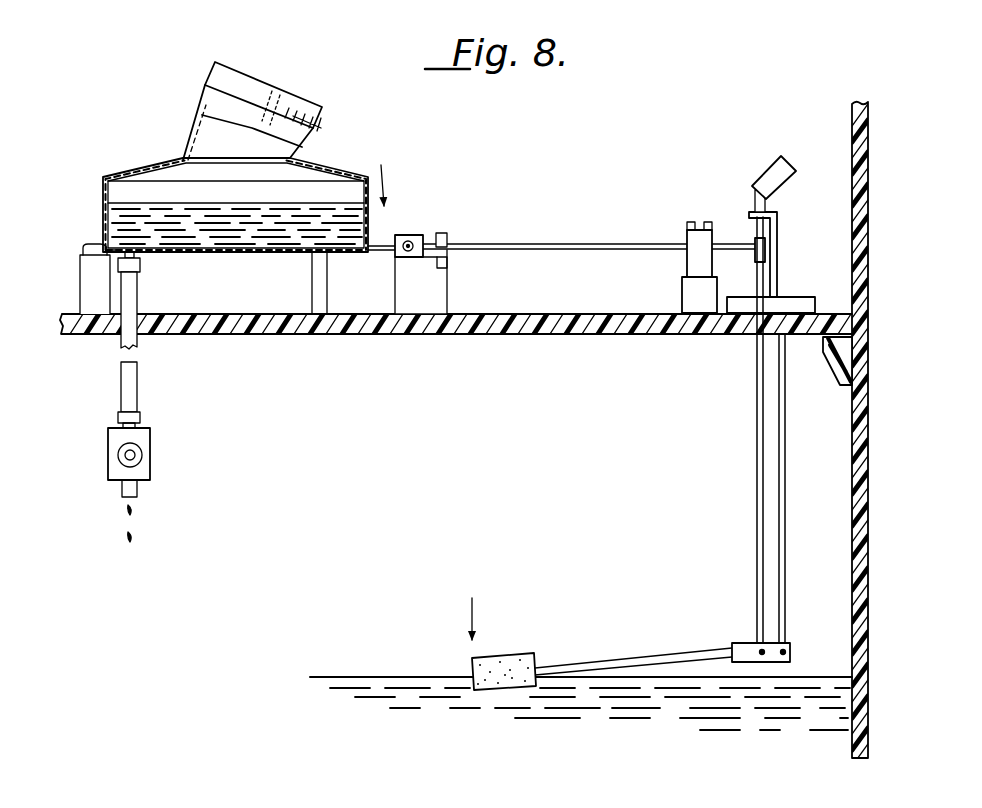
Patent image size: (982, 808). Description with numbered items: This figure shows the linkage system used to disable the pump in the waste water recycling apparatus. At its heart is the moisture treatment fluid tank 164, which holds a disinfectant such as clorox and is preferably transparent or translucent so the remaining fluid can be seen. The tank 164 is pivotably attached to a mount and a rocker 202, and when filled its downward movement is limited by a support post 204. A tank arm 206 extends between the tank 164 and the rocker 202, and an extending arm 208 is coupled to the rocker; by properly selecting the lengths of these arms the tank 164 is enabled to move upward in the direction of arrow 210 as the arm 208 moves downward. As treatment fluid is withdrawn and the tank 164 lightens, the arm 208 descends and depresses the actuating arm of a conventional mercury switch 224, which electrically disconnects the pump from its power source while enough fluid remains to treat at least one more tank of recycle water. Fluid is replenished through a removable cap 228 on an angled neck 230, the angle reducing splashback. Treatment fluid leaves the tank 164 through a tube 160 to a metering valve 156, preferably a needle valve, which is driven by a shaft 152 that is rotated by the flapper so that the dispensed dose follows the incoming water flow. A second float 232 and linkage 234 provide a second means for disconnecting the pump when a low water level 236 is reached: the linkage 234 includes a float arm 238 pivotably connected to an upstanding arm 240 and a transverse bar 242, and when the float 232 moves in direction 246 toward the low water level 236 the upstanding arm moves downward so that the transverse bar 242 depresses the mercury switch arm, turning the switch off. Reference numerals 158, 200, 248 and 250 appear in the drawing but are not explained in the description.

The shaft 152 is at (122, 457).
The metering valve 156 is at (151, 453).
The liquid drops from outlet 158 is at (128, 535).
The tube 160 is at (128, 372).
The fluid tank 164 is at (133, 170).
The tank support bracket 200 is at (95, 247).
The rocker 202 is at (421, 240).
The support post 204 is at (312, 287).
The tank arm 206 is at (388, 241).
The extending arm 208 is at (600, 242).
The arrow 210 is at (388, 196).
The mercury switch 224 is at (686, 267).
The removable cap 228 is at (283, 91).
The angled neck 230 is at (201, 101).
The second float 232 is at (516, 656).
The linkage 234 is at (761, 391).
The low water level 236 is at (420, 676).
The float arm 238 is at (662, 658).
The upstanding arm 240 is at (757, 410).
The transverse bar 242 is at (730, 240).
The direction 246 is at (476, 606).
The handle 248 is at (768, 168).
The guide post 250 is at (788, 425).